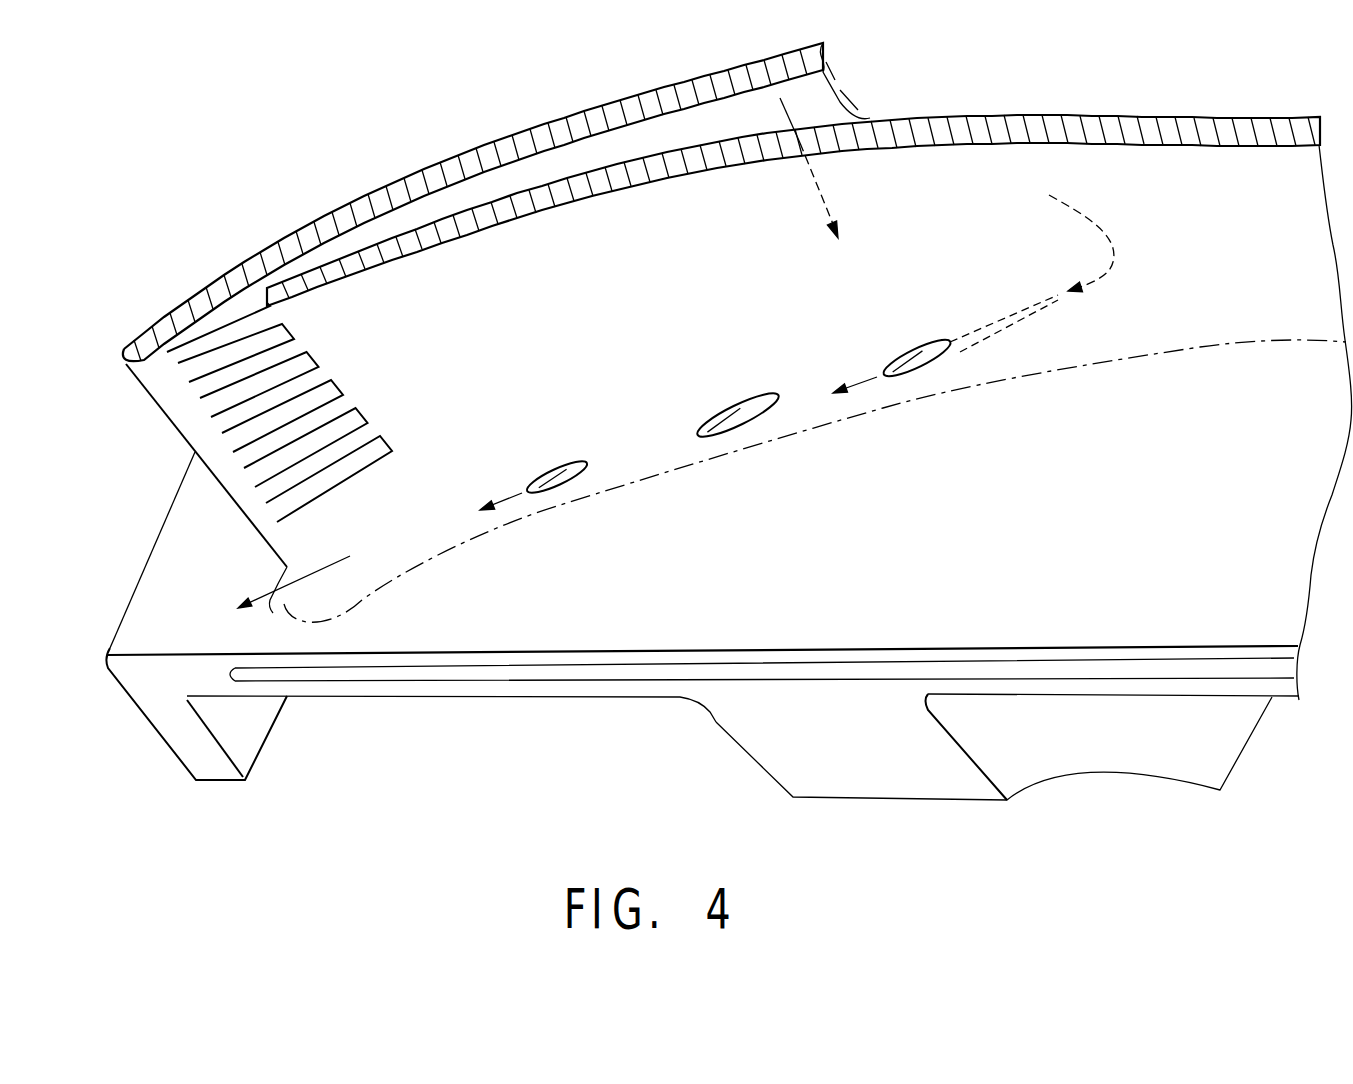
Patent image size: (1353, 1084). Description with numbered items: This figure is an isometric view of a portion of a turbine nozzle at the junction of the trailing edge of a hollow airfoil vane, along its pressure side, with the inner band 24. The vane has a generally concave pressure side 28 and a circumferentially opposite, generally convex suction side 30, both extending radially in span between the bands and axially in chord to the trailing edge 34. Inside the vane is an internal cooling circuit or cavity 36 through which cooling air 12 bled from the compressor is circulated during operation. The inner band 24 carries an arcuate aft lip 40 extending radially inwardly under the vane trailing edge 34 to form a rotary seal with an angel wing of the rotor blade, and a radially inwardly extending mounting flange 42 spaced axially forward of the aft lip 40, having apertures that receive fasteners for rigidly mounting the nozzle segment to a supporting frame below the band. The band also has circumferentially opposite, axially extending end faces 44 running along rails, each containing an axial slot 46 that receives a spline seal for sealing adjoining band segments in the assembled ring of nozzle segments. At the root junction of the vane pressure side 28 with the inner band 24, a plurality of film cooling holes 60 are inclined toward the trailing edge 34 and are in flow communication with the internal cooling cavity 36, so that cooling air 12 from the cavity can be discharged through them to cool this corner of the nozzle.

The cooling air 12 is at (522, 493).
The inner band 24 is at (1122, 538).
The pressure side 28 is at (587, 289).
The suction side 30 is at (460, 151).
The trailing edge 34 is at (153, 402).
The internal cooling circuit or cavity 36 is at (603, 158).
The aft lip 40 is at (160, 740).
The mounting flange 42 is at (747, 753).
The end faces 44 is at (562, 690).
The axial slot 46 is at (392, 675).
The film cooling holes 60 is at (740, 418).